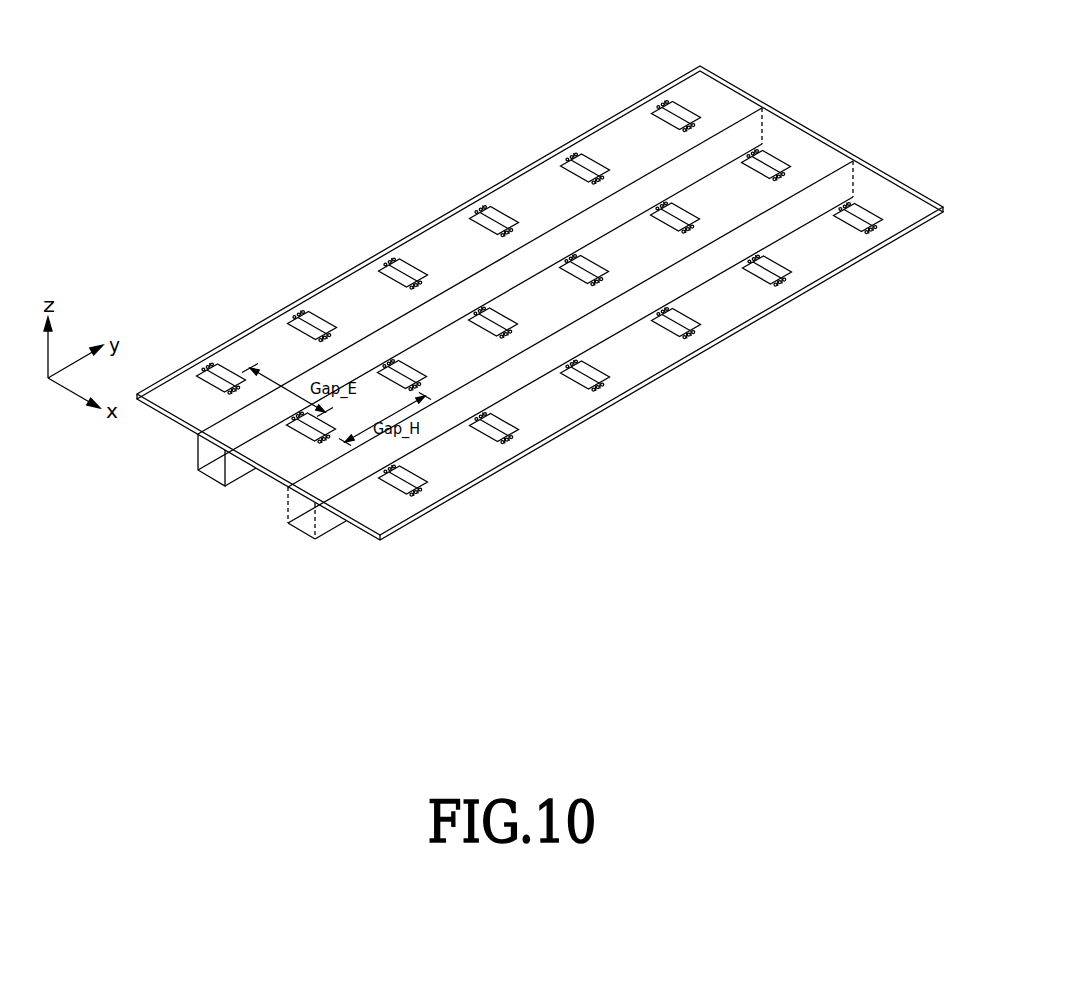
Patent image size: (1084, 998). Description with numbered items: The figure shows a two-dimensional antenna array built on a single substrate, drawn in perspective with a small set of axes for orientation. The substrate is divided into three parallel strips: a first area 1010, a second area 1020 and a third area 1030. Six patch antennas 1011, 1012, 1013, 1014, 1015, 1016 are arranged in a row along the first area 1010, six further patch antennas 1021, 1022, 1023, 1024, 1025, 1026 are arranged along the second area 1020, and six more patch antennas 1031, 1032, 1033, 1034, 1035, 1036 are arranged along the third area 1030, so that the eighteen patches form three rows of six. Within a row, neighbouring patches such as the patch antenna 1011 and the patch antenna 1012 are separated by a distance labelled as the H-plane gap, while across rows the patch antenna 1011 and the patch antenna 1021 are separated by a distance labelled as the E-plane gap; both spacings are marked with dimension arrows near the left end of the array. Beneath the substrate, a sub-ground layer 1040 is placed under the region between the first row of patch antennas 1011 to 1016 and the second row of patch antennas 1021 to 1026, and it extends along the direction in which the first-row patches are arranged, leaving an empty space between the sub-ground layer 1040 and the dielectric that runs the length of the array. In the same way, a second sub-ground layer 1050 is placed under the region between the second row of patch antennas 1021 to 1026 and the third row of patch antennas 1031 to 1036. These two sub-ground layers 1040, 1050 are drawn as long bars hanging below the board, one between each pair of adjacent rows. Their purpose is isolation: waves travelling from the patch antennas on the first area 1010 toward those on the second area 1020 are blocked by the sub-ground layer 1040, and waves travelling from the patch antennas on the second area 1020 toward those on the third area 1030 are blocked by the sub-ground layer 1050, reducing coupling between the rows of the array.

The first area 1010 is at (173, 420).
The second area 1020 is at (270, 478).
The third area 1030 is at (362, 528).
The sub-ground layer 1040 is at (205, 482).
The sub-ground layer 1050 is at (302, 530).
The patch antenna 1011 is at (214, 368).
The patch antenna 1012 is at (305, 315).
The patch antenna 1013 is at (396, 263).
The patch antenna 1014 is at (487, 210).
The patch antenna 1015 is at (578, 158).
The patch antenna 1016 is at (669, 105).
The patch antenna 1021 is at (308, 418).
The patch antenna 1022 is at (397, 365).
The patch antenna 1023 is at (489, 313).
The patch antenna 1024 is at (580, 261).
The patch antenna 1025 is at (668, 210).
The patch antenna 1026 is at (771, 160).
The patch antenna 1031 is at (417, 488).
The patch antenna 1032 is at (508, 436).
The patch antenna 1033 is at (599, 383).
The patch antenna 1034 is at (690, 330).
The patch antenna 1035 is at (783, 278).
The patch antenna 1036 is at (872, 226).